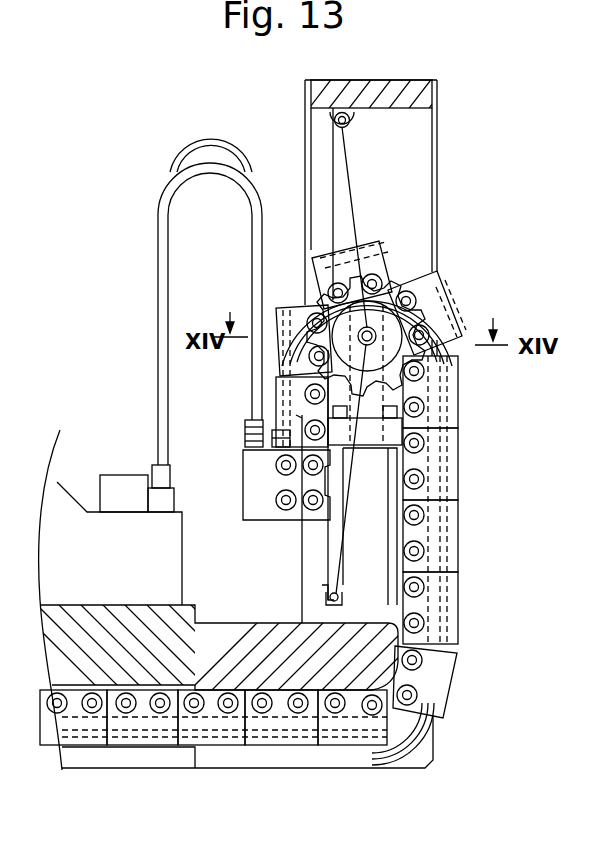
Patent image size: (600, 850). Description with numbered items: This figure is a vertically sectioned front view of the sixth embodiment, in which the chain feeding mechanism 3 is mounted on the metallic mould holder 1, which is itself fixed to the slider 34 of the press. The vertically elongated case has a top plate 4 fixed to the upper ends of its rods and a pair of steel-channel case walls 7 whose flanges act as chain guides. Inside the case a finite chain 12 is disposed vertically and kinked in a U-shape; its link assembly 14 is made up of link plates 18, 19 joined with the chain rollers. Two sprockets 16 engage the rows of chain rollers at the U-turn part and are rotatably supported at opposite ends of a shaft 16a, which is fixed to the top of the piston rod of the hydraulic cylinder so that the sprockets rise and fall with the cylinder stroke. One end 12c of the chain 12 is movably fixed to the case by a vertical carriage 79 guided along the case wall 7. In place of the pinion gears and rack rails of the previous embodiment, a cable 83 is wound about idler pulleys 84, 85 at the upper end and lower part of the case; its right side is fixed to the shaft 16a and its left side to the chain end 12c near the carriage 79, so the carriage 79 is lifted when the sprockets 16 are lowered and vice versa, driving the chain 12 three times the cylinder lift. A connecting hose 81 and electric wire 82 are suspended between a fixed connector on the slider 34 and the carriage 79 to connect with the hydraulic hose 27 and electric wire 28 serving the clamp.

The metallic mould holder 1 is at (193, 607).
The mast assembly 3 is at (375, 193).
The top plate 4 is at (388, 92).
The case wall 7 is at (436, 155).
The chain 12 is at (295, 493).
The one end of chain 12c is at (305, 440).
The link assembly 14 is at (510, 388).
The sprocket 16 is at (411, 325).
The shaft 16a is at (368, 334).
The cylinder barrel 18 is at (388, 396).
The inner link plate 19 is at (375, 478).
The hydraulic hose 27 is at (307, 247).
The electric wire 28 is at (310, 285).
The slider 34 is at (170, 563).
The vertical carriage 79 is at (250, 488).
The connecting hose 81 is at (163, 253).
The electric wire 82 is at (175, 162).
The cable 83 is at (349, 167).
The idler pulley 84 is at (349, 126).
The idler pulley 85 is at (338, 590).